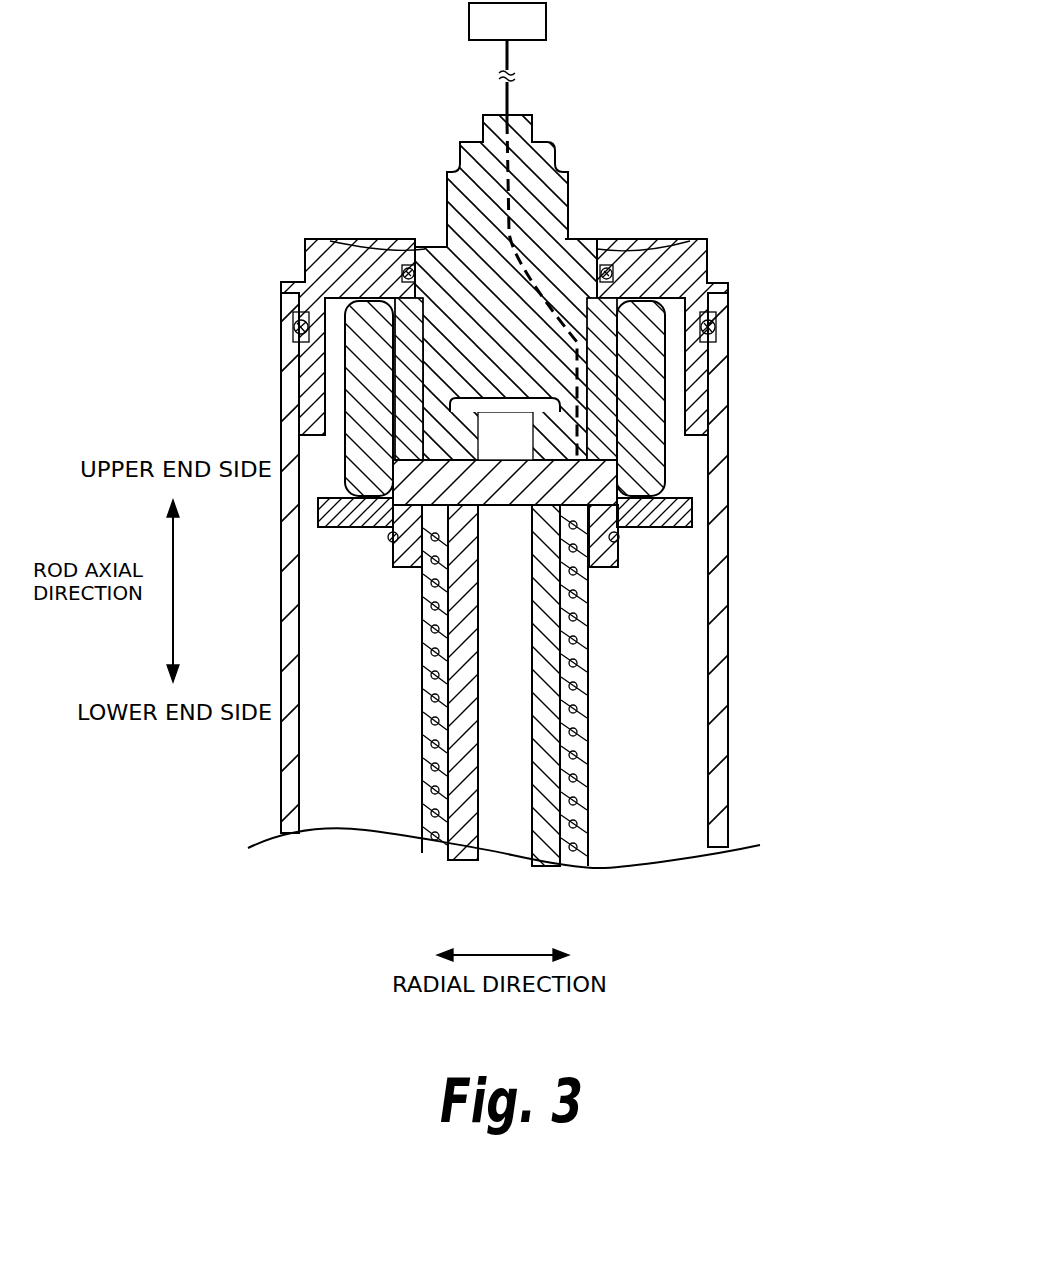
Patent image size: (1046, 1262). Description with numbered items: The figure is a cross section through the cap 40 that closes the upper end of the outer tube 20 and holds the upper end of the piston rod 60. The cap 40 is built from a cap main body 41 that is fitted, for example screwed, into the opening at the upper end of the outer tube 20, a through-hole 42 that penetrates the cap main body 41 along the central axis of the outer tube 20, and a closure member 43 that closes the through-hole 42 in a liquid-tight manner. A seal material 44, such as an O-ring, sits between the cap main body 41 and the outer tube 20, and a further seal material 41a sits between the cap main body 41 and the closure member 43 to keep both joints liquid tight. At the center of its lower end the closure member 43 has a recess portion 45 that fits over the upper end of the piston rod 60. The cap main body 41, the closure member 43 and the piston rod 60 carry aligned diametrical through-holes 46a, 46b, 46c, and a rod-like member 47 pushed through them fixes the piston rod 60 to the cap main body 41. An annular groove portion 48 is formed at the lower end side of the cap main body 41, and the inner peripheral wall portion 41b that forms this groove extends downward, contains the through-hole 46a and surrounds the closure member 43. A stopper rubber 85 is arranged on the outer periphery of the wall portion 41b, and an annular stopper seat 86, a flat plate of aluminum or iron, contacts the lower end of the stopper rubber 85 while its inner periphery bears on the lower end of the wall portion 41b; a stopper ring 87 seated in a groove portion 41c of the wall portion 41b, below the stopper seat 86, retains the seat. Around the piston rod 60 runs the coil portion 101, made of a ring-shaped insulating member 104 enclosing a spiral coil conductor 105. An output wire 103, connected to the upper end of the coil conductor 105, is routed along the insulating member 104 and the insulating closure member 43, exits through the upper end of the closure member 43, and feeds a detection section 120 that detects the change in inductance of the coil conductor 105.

The detection section 120 is at (548, 16).
The output wire 103 is at (513, 163).
The cap 40 is at (686, 180).
The closure member 43 is at (430, 246).
The through-hole 42 is at (578, 347).
The seal material 41a is at (607, 266).
The cap main body 41 is at (678, 263).
The seal material 44 is at (716, 326).
The annular groove portion 48 is at (672, 362).
The inner peripheral wall portion 41b is at (613, 388).
The recess portion 45 is at (452, 406).
The stopper rubber 85 is at (640, 443).
The rod-like member 47 is at (603, 473).
The annular stopper seat 86 is at (680, 513).
The through-hole 46a is at (390, 500).
The through-hole 46b is at (410, 515).
The through-hole 46c is at (523, 496).
The stopper ring 87 is at (616, 540).
The groove portion 41c is at (628, 532).
The piston rod 60 is at (548, 637).
The outer tube 20 is at (721, 688).
The insulating member 104 is at (582, 768).
The coil conductor 105 is at (582, 800).
The coil portion 101 is at (790, 765).